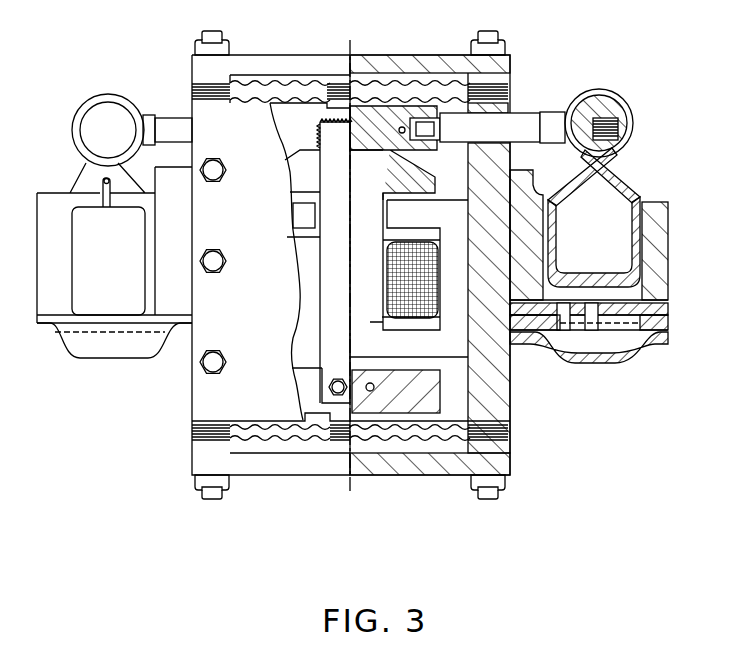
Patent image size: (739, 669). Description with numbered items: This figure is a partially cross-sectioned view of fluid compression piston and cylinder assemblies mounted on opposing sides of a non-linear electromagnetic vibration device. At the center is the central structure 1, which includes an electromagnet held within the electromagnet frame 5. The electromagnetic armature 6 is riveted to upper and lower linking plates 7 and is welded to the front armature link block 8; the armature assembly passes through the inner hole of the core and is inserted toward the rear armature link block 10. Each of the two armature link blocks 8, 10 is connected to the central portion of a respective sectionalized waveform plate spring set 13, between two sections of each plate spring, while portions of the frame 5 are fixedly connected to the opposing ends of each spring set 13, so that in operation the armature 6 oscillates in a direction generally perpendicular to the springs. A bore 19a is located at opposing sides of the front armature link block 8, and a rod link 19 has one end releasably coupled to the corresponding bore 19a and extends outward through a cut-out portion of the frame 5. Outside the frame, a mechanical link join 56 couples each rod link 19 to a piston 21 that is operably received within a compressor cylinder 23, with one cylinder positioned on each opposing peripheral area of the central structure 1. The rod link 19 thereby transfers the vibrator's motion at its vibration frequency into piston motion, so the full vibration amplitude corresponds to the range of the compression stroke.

The central structure 1 is at (462, 347).
The electromagnet frame 5 is at (500, 401).
The electromagnetic armature 6 is at (386, 173).
The linking plates 7 is at (335, 135).
The front armature link block 8 is at (398, 118).
The rear armature link block 10 is at (410, 410).
The waveform plate spring sets 13 is at (447, 92).
The rod link 19 is at (173, 128).
The bore 19a is at (406, 130).
The piston 21 is at (97, 183).
The compressor cylinder 23 is at (45, 218).
The mechanical link join 56 is at (113, 116).